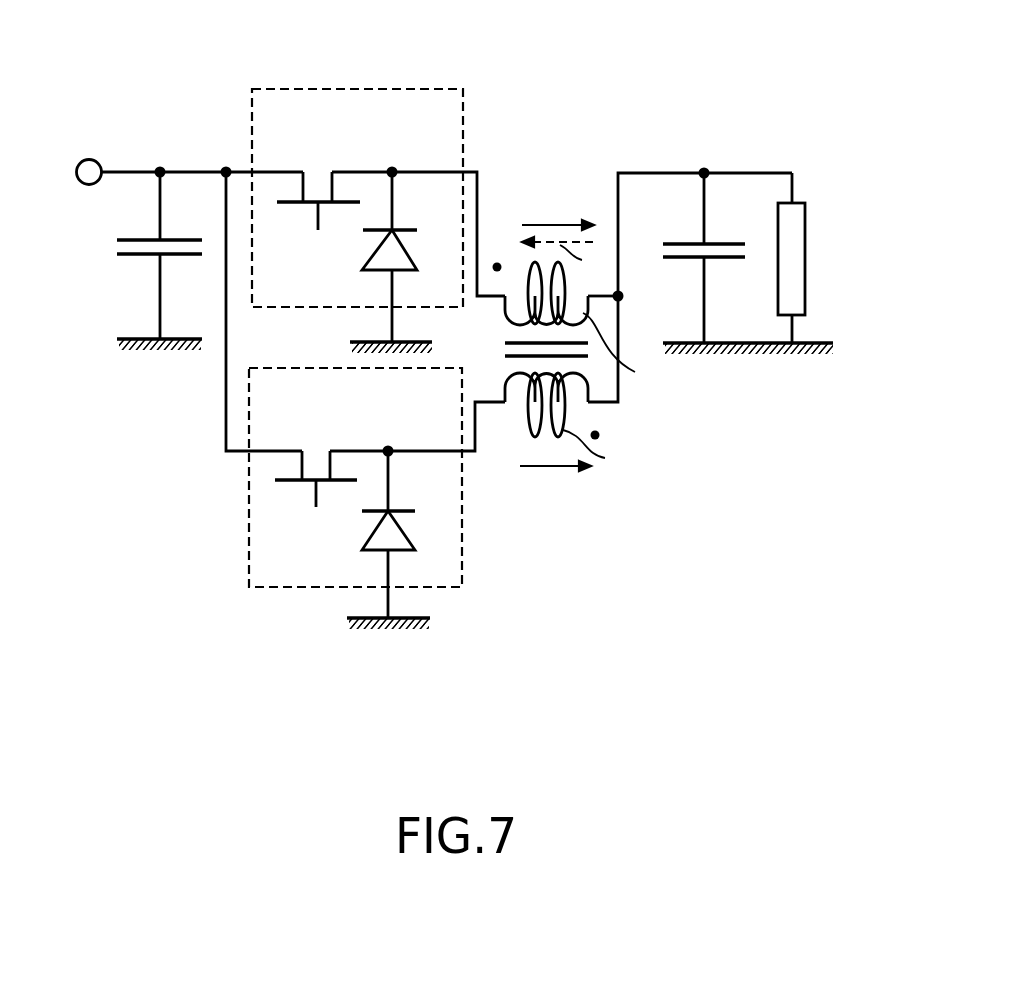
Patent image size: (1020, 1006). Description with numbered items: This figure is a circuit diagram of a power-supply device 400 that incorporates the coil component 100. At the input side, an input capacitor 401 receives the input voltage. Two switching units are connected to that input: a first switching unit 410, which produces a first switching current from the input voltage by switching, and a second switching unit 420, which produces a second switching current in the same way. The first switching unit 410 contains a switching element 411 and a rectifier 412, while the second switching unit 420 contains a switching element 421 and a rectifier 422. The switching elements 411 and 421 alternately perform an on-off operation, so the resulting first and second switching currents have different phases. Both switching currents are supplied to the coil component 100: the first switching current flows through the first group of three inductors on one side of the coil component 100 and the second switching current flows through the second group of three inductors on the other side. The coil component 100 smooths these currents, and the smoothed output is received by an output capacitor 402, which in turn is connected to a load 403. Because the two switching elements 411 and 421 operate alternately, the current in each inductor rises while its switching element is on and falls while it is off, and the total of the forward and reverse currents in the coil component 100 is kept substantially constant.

The coil component 100 is at (633, 407).
The power-supply device 400 is at (752, 52).
The input capacitor 401 is at (123, 240).
The output capacitor 402 is at (713, 242).
The load 403 is at (807, 265).
The first switching unit 410 is at (371, 86).
The switching element 411 is at (294, 203).
The rectifier 412 is at (422, 213).
The second switching unit 420 is at (289, 590).
The switching element 421 is at (297, 482).
The rectifier 422 is at (410, 540).